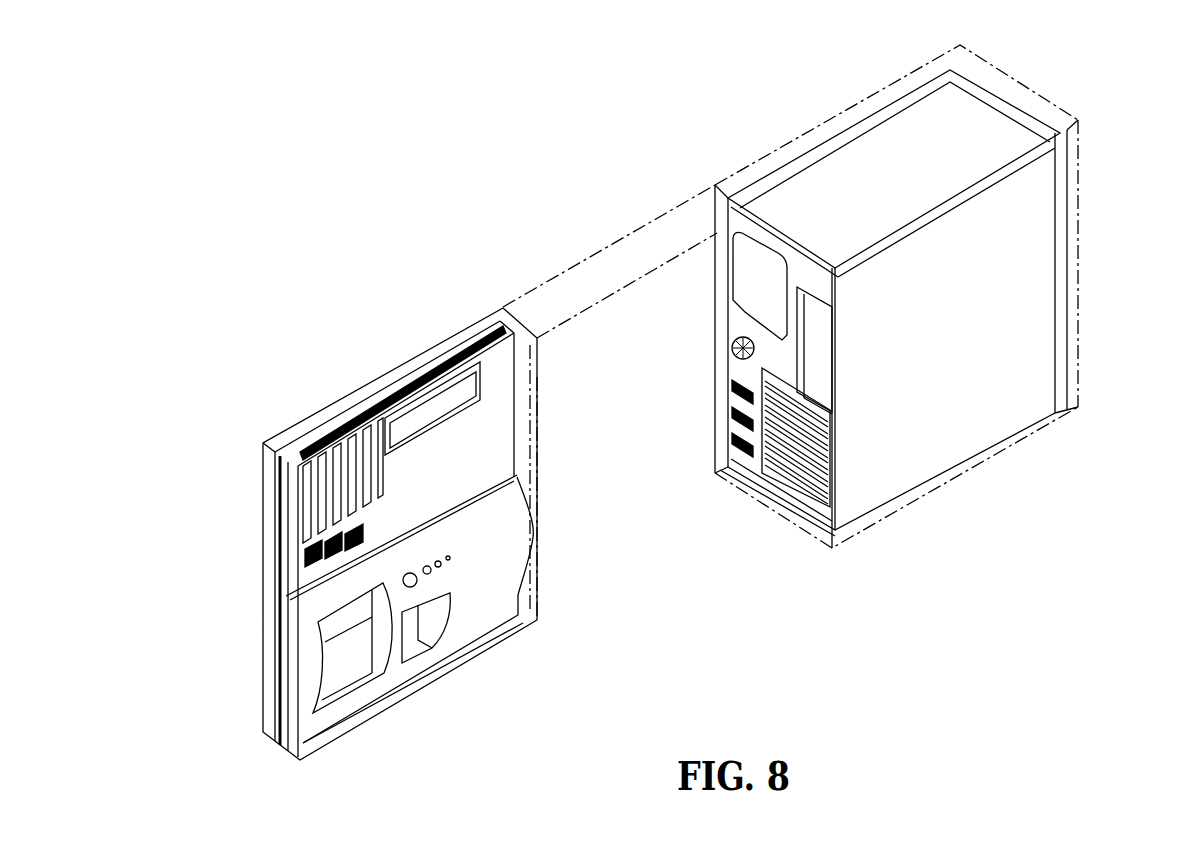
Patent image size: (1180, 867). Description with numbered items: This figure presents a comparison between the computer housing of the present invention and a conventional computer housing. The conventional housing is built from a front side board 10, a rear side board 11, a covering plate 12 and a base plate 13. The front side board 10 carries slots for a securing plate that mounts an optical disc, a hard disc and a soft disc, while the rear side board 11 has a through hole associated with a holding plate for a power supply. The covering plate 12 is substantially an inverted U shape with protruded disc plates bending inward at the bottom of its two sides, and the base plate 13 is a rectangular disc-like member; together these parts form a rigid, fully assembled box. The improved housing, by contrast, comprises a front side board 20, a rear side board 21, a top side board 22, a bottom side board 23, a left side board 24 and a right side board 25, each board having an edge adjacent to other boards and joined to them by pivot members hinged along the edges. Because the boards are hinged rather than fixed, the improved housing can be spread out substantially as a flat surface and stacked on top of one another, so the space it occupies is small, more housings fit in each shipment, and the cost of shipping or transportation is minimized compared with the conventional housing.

The front side board 10 is at (1063, 260).
The rear side board 11 is at (733, 370).
The covering plate 12 is at (823, 172).
The base plate 13 is at (817, 523).
The front side board 20 is at (502, 573).
The rear side board 21 is at (507, 420).
The top side board 22 is at (447, 362).
The bottom side board 23 is at (347, 418).
The left side board 24 is at (270, 662).
The right side board 25 is at (277, 520).